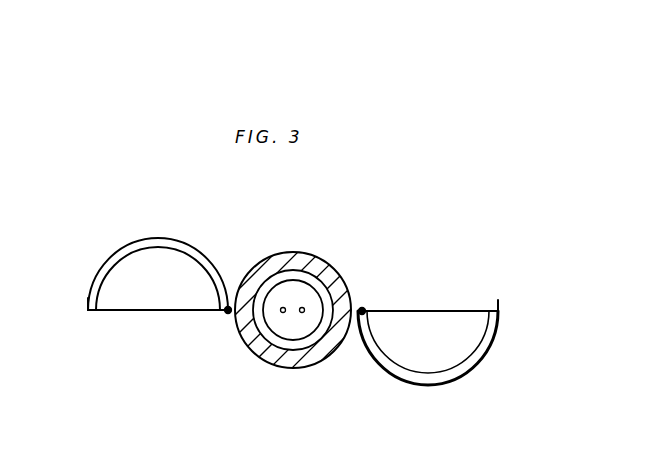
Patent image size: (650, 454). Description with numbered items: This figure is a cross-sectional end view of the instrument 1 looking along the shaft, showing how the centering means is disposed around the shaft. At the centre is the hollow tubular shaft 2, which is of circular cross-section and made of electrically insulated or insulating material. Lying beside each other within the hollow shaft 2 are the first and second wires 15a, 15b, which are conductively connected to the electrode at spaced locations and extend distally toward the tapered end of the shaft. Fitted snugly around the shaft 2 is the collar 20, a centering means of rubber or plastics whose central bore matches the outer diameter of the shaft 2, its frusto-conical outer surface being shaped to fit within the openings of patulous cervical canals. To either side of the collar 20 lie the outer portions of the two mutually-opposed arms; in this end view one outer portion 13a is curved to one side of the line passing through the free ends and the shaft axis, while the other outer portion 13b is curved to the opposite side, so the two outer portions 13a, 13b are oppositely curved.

The instrument 1 is at (432, 201).
The hollow tubular shaft 2 is at (295, 342).
The outer portion 13a is at (158, 243).
The outer portion 13b is at (428, 378).
The first wire 15a is at (279, 314).
The second wire 15b is at (304, 307).
The collar 20 is at (288, 262).